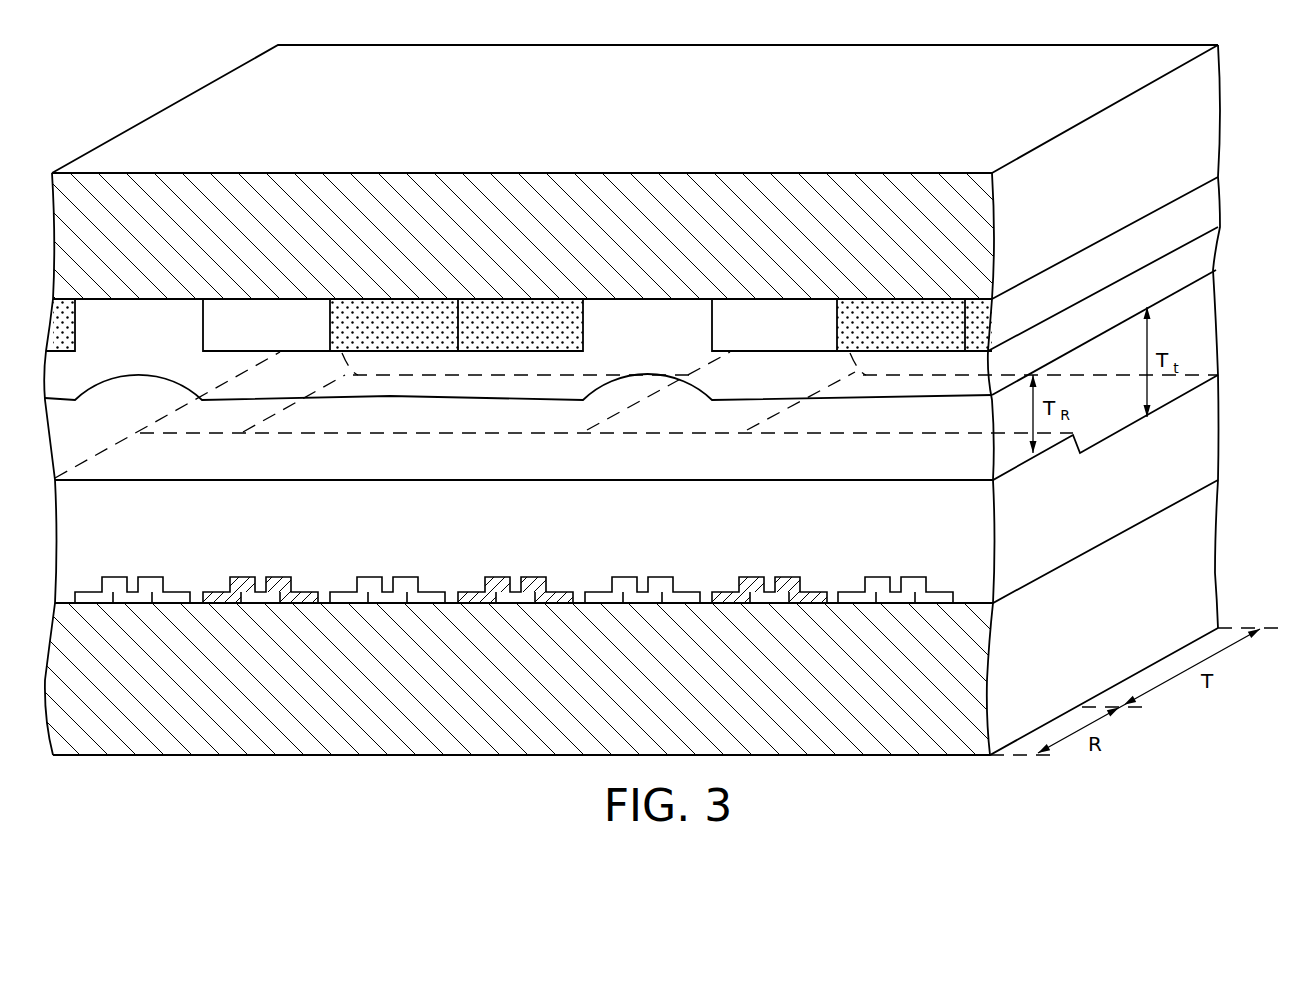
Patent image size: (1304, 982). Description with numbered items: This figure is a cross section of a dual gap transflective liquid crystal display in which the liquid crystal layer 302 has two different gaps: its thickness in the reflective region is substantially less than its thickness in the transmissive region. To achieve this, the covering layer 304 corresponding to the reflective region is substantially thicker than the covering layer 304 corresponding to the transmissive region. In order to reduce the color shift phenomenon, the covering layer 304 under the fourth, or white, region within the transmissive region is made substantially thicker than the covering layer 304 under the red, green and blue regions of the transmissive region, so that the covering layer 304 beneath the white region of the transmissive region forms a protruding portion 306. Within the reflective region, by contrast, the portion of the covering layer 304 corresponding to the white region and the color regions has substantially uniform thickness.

The liquid crystal layer 302 is at (1205, 331).
The covering layer 304 is at (1205, 435).
The protruding portion 306 is at (757, 372).